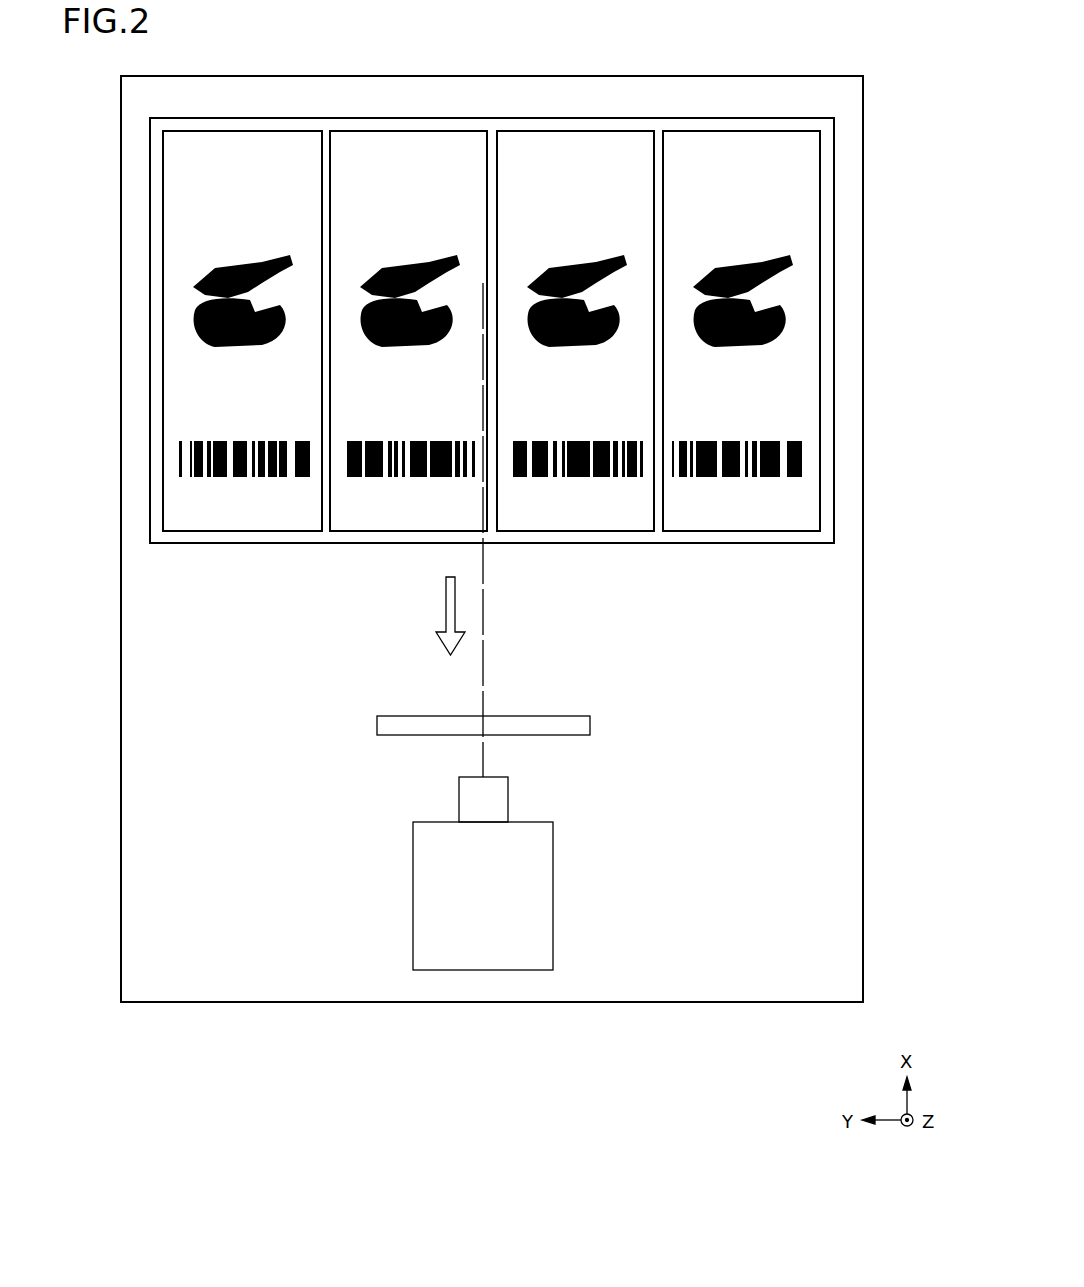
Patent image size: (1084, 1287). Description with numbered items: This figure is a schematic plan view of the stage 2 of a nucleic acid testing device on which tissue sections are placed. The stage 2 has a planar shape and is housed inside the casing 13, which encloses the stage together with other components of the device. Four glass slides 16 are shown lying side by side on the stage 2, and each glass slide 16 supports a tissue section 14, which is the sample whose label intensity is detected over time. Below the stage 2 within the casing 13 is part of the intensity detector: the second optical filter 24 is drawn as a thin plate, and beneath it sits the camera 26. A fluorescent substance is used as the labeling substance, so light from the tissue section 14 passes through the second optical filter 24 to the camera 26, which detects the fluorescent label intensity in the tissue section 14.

The stage 2 is at (834, 148).
The glass slide 16 is at (820, 218).
The tissue section 14 is at (777, 338).
The casing 13 is at (863, 823).
The second optical filter 24 is at (590, 725).
The camera 26 is at (553, 893).